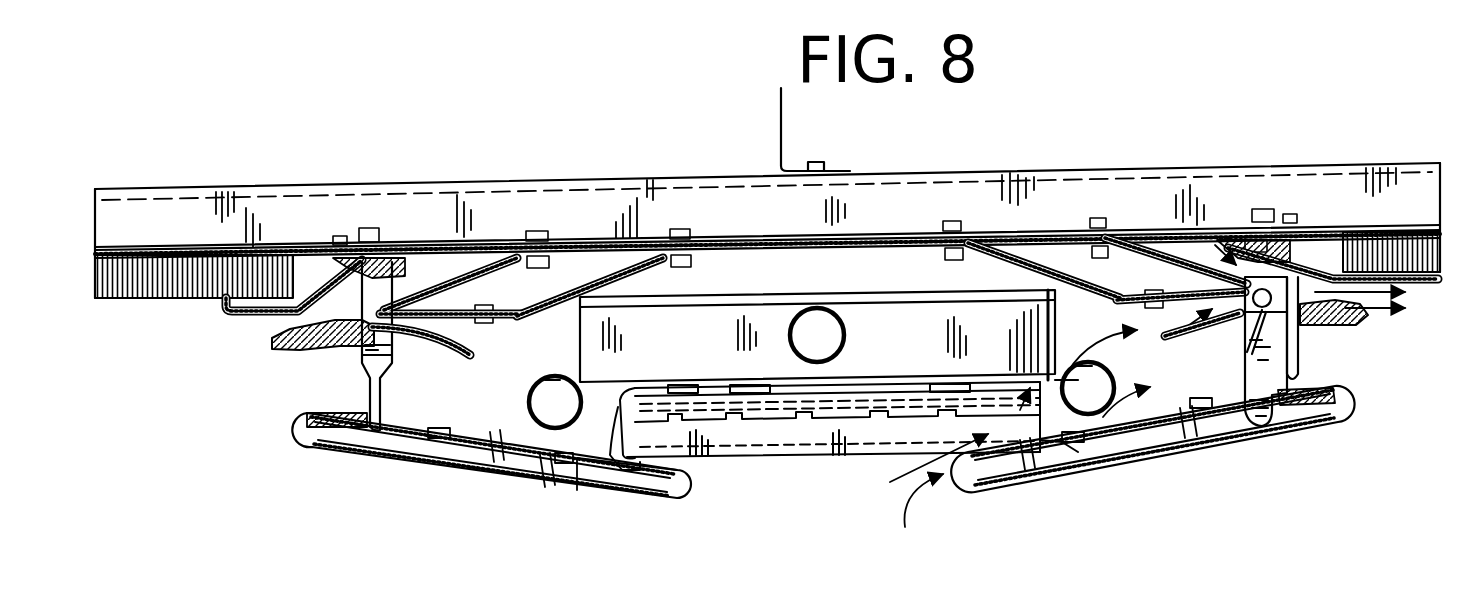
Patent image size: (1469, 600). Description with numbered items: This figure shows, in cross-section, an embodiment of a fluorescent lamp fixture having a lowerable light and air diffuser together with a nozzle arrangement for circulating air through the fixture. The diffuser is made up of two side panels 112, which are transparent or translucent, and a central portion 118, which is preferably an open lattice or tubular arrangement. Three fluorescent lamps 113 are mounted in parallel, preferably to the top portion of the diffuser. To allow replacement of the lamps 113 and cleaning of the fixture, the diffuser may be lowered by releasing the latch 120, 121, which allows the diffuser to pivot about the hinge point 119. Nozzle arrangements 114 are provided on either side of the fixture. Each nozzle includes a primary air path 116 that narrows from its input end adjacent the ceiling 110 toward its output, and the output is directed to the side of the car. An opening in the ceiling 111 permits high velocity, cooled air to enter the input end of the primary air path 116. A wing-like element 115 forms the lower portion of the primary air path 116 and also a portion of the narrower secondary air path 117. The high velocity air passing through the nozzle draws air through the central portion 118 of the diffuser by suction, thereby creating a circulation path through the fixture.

The ceiling 110 is at (1376, 228).
The opening in the ceiling 111 is at (1190, 254).
The side panel 112 is at (575, 482).
The fluorescent lamp 113 is at (845, 336).
The nozzle arrangement 114 is at (265, 346).
The wing-like element 115 is at (1368, 320).
The primary air path 116 is at (1437, 165).
The secondary air path 117 is at (1158, 318).
The central portion 118 is at (825, 446).
The hinge point 119 is at (356, 440).
The latch 120 is at (1298, 364).
The latch 121 is at (1293, 402).